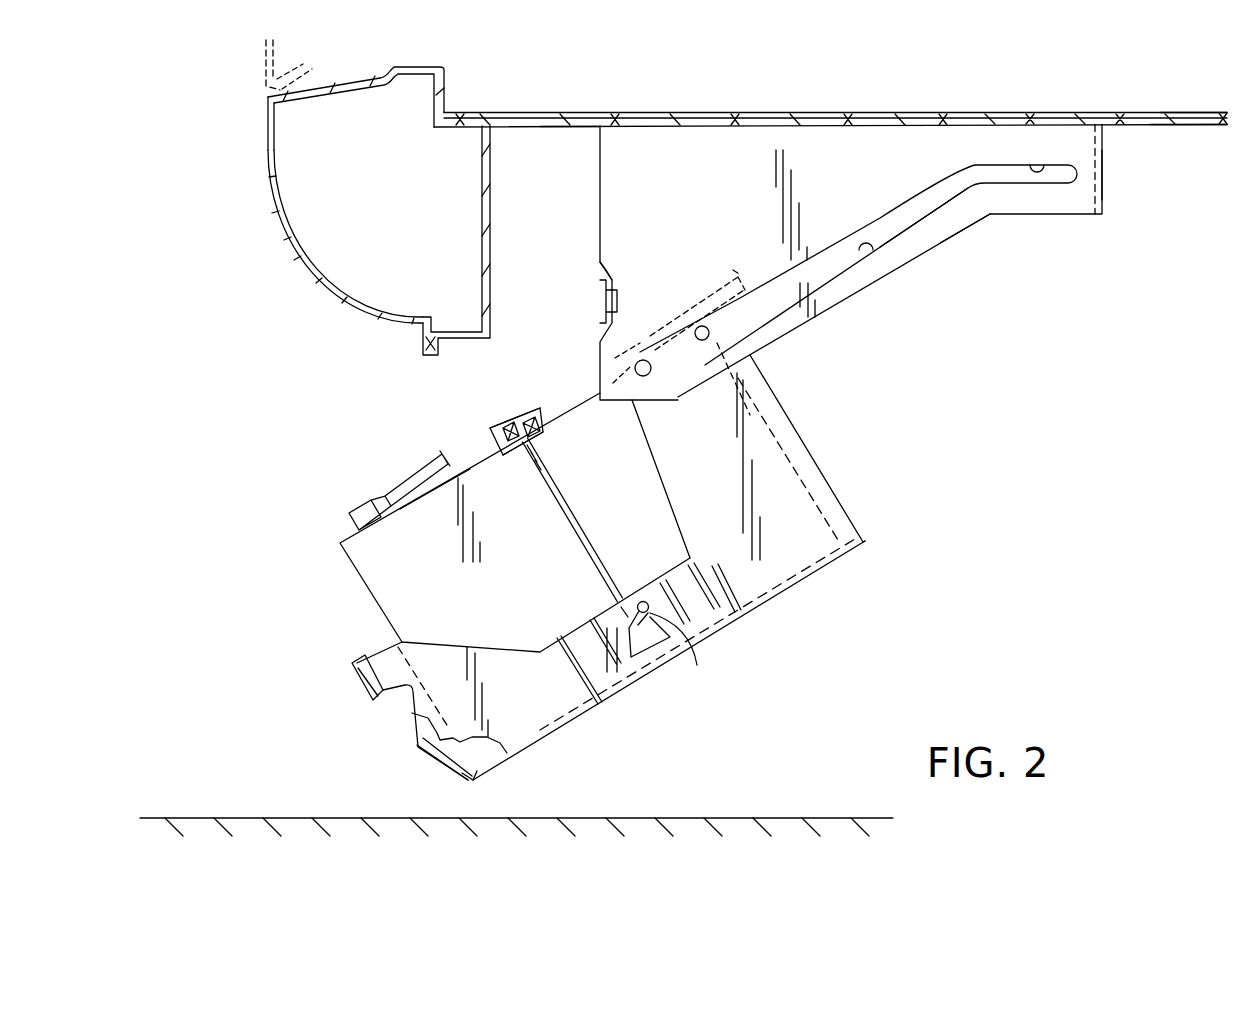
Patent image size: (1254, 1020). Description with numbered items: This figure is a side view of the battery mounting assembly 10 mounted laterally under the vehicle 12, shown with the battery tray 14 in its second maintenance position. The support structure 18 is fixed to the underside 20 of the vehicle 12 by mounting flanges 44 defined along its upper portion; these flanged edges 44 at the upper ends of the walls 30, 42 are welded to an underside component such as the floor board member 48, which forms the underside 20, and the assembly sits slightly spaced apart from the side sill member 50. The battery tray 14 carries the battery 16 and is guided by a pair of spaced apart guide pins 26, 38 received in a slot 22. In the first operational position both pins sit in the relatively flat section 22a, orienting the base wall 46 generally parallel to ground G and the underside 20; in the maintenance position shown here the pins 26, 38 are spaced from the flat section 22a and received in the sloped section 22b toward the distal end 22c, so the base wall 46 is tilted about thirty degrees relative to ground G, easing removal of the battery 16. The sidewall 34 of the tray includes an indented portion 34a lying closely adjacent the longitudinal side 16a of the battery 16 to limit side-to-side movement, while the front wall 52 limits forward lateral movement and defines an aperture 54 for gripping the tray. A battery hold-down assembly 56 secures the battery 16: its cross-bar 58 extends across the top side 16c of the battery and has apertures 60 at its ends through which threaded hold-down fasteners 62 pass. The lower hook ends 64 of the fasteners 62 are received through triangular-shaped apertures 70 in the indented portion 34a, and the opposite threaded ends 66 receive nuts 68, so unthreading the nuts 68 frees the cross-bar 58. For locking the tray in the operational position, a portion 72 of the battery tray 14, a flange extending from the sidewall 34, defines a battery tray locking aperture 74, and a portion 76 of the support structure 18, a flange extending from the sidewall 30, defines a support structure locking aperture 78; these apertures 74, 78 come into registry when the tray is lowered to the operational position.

The battery mounting assembly 10 is at (937, 385).
The vehicle 12 is at (262, 141).
The battery tray 14 is at (791, 424).
The battery 16 is at (363, 576).
The longitudinal side 16a is at (427, 512).
The top side 16c is at (470, 468).
The support structure 18 is at (1030, 214).
The underside 20 is at (562, 128).
The slot 22 is at (907, 218).
The flat section 22a is at (1040, 167).
The sloped section 22b is at (866, 252).
The distal end 22c is at (650, 378).
The guide pin 26 is at (704, 342).
The sidewall 30 is at (955, 223).
The sidewall 34 is at (787, 491).
The indented portion 34a is at (600, 668).
The guide pin 38 is at (641, 360).
The wall 42 is at (1107, 176).
The mounting flanges 44 is at (700, 112).
The base wall 46 is at (757, 607).
The floor board member 48 is at (1164, 112).
The side sill member 50 is at (334, 304).
The front wall 52 is at (422, 748).
The aperture 54 is at (443, 770).
The battery hold-down assembly 56 is at (516, 418).
The cross-bar 58 is at (541, 420).
The apertures 60 is at (519, 448).
The hold-down fasteners 62 is at (583, 531).
The hook ends 64 is at (697, 665).
The threaded ends 66 is at (503, 427).
The nuts 68 is at (528, 414).
The triangular-shaped apertures 70 is at (642, 650).
The portion of the battery tray 72 is at (368, 703).
The battery tray locking aperture 74 is at (350, 688).
The portion of the support structure 76 is at (598, 302).
The support structure locking aperture 78 is at (600, 270).
The ground G is at (740, 818).